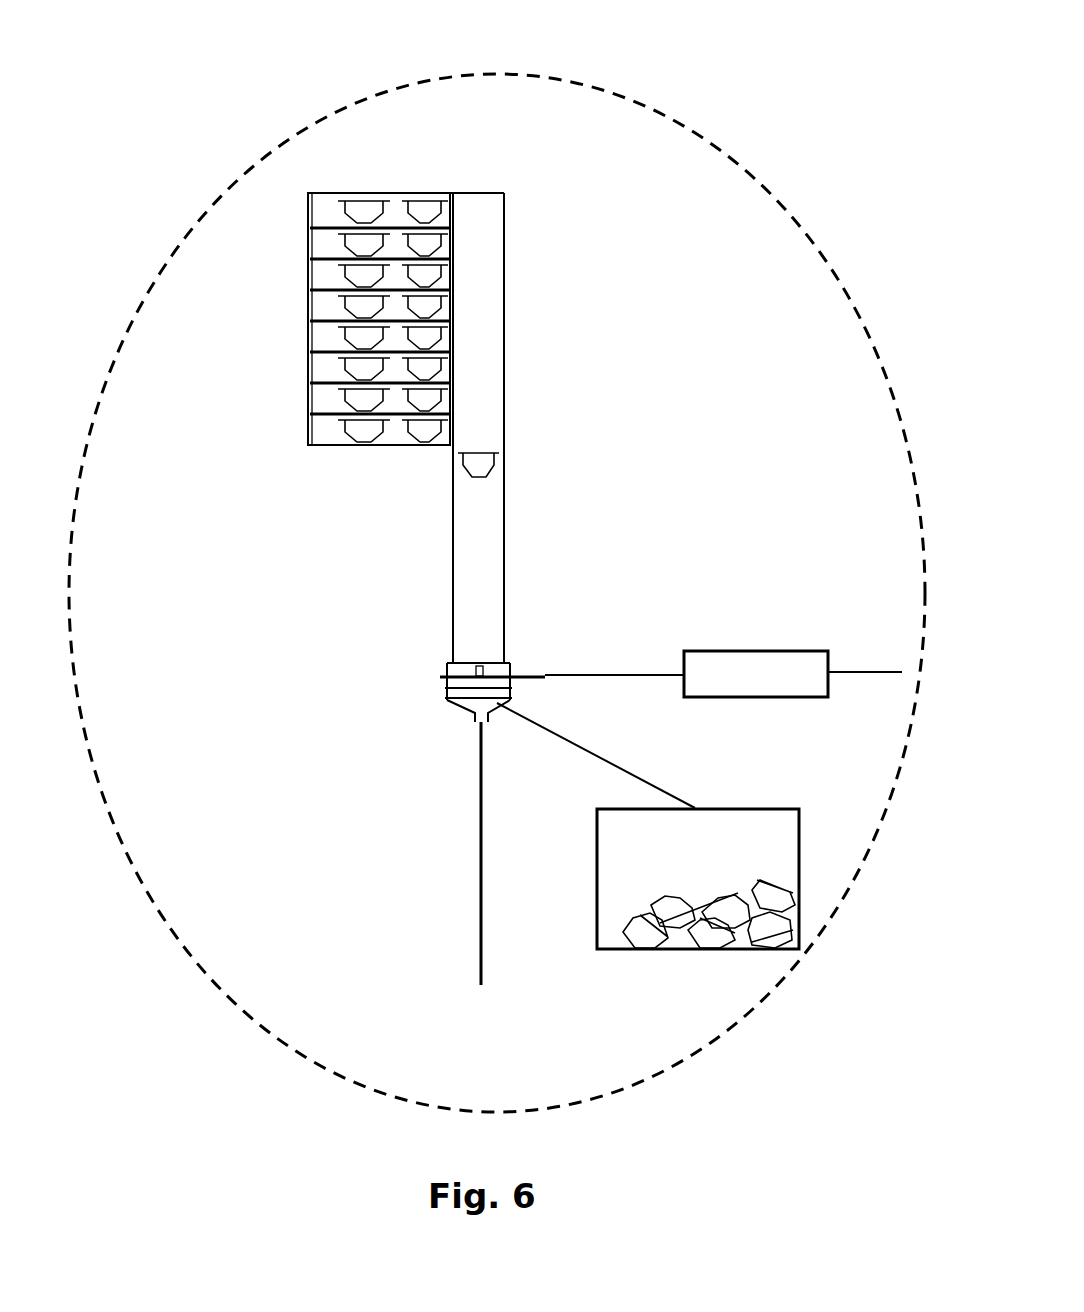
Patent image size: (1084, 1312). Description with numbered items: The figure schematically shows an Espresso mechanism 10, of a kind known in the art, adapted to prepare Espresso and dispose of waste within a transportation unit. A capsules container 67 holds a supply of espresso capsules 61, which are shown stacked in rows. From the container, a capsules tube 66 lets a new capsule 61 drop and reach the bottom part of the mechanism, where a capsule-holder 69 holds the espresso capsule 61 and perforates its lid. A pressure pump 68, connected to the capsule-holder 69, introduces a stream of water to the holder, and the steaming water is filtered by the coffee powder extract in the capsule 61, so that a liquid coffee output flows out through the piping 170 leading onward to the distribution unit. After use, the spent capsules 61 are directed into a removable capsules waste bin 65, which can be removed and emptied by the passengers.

The Espresso mechanism 10 is at (480, 70).
The espresso capsule 61 is at (484, 438).
The removable capsules waste bin 65 is at (728, 806).
The capsules tube 66 is at (507, 258).
The capsules container 67 is at (418, 188).
The pressure pump 68 is at (700, 649).
The capsule-holder 69 is at (433, 722).
The piping 170 is at (478, 912).